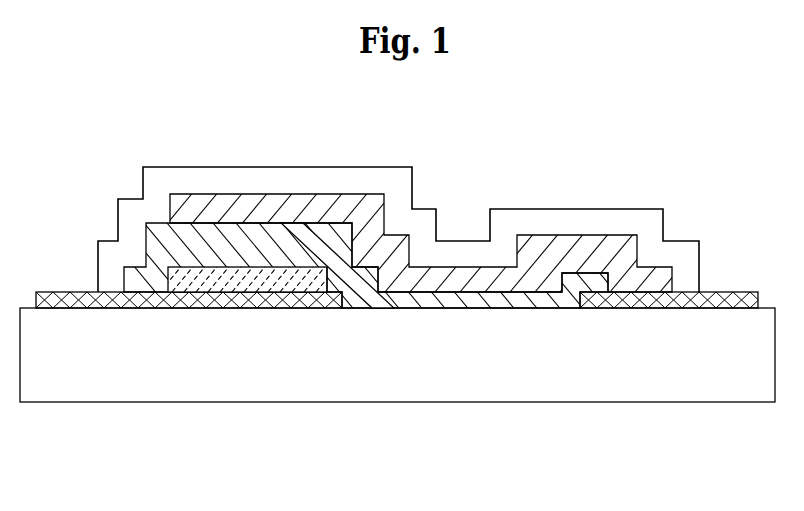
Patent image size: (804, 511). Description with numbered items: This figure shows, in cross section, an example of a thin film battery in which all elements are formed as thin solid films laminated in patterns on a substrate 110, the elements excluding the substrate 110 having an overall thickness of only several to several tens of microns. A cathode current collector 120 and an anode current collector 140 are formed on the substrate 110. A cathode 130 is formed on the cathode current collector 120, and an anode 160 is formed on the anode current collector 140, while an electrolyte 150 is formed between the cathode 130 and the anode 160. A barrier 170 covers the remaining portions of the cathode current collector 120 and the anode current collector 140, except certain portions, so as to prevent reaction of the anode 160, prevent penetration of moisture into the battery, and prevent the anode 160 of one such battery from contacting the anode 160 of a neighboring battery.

The substrate 110 is at (640, 368).
The cathode current collector 120 is at (243, 310).
The cathode 130 is at (320, 282).
The anode current collector 140 is at (718, 303).
The electrolyte 150 is at (155, 312).
The anode 160 is at (293, 203).
The barrier 170 is at (579, 208).